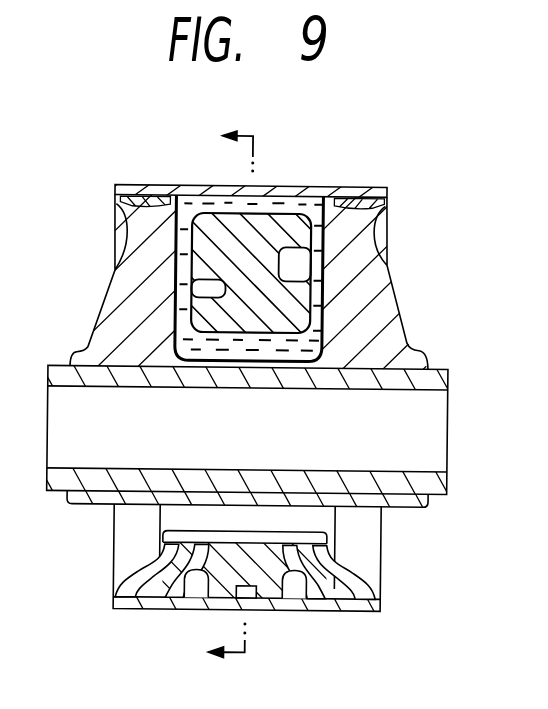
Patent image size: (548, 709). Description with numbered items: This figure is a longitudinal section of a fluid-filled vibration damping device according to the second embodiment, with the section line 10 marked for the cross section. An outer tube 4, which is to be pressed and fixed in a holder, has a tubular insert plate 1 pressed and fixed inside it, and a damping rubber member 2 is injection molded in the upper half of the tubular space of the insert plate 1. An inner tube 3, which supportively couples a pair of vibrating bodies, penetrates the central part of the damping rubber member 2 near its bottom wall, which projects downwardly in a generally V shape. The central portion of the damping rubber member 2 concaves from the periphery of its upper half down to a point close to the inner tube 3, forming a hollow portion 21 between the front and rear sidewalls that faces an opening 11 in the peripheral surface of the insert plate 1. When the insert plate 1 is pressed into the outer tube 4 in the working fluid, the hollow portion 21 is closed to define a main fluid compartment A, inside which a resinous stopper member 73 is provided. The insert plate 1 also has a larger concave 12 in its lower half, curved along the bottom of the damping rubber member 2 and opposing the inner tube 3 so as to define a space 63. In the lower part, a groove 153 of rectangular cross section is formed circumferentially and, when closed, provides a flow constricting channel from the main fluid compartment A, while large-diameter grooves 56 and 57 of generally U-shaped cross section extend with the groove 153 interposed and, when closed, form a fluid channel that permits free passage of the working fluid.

The insert plate 1 is at (128, 186).
The damping rubber member 2 is at (143, 259).
The inner tube 3 is at (63, 368).
The outer tube 4 is at (156, 186).
The line 10— 10 is at (216, 395).
The opening 11 is at (310, 202).
The concave 12 is at (282, 612).
The hollow portion 21 is at (328, 247).
The large-diameter groove 56 is at (192, 612).
The large-diameter groove 57 is at (302, 612).
The space 63 is at (318, 516).
The resinous stopper member 73 is at (266, 226).
The groove 153 is at (252, 612).
The main fluid compartment A is at (304, 339).